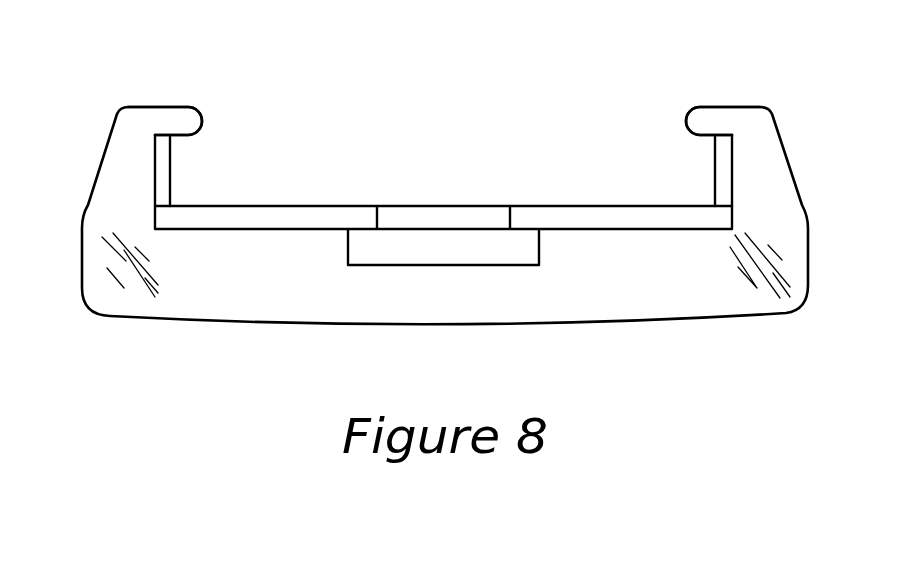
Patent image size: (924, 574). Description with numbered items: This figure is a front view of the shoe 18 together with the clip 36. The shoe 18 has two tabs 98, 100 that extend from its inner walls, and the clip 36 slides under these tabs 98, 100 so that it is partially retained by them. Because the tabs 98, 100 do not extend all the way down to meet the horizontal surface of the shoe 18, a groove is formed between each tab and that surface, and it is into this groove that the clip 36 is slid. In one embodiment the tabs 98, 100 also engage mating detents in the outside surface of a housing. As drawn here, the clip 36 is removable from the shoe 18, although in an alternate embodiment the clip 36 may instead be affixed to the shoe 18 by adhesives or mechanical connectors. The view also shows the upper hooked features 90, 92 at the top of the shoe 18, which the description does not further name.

The shoe 18 is at (778, 188).
The first hook 90 is at (186, 122).
The second hook 92 is at (698, 122).
The tab 98 is at (162, 163).
The tab 100 is at (722, 163).
The clip 36 is at (565, 217).